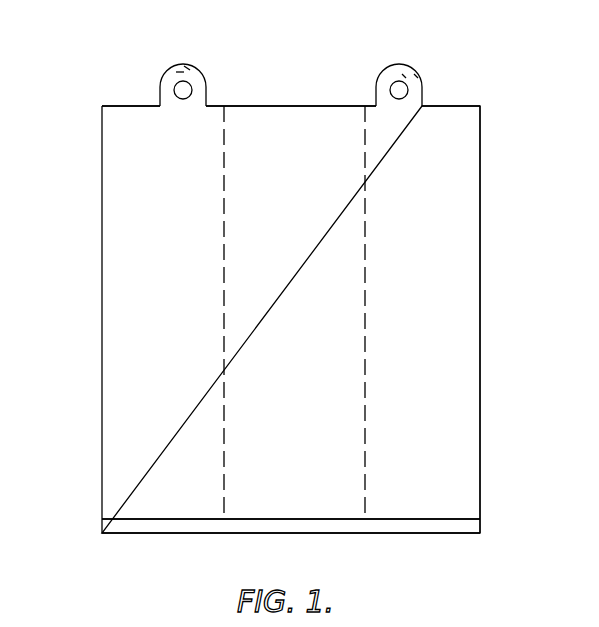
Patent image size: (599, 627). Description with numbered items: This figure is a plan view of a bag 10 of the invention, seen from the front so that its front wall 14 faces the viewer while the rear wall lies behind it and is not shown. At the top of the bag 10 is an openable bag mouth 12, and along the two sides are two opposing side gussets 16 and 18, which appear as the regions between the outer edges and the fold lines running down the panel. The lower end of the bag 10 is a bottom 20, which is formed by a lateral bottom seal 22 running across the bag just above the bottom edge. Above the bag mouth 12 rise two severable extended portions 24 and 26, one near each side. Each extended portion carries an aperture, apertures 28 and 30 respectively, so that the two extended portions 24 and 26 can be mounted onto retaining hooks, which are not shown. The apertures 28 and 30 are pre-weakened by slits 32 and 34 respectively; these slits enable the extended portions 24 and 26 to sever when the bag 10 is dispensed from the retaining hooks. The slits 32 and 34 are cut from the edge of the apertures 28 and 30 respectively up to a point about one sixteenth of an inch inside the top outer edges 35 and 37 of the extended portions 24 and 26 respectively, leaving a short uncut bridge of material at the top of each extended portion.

The bag 10 is at (486, 231).
The bag mouth 12 is at (290, 106).
The front wall 14 is at (308, 320).
The side gusset 16 is at (132, 295).
The side gusset 18 is at (445, 313).
The bottom 20 is at (252, 533).
The lateral bottom seal 22 is at (322, 519).
The severable extended portion 24 is at (201, 82).
The severable extended portion 26 is at (417, 82).
The aperture 28 is at (173, 87).
The aperture 30 is at (410, 92).
The slit 32 is at (180, 75).
The slit 34 is at (417, 76).
The top outer edge 35 is at (186, 66).
The top outer edge 37 is at (405, 76).